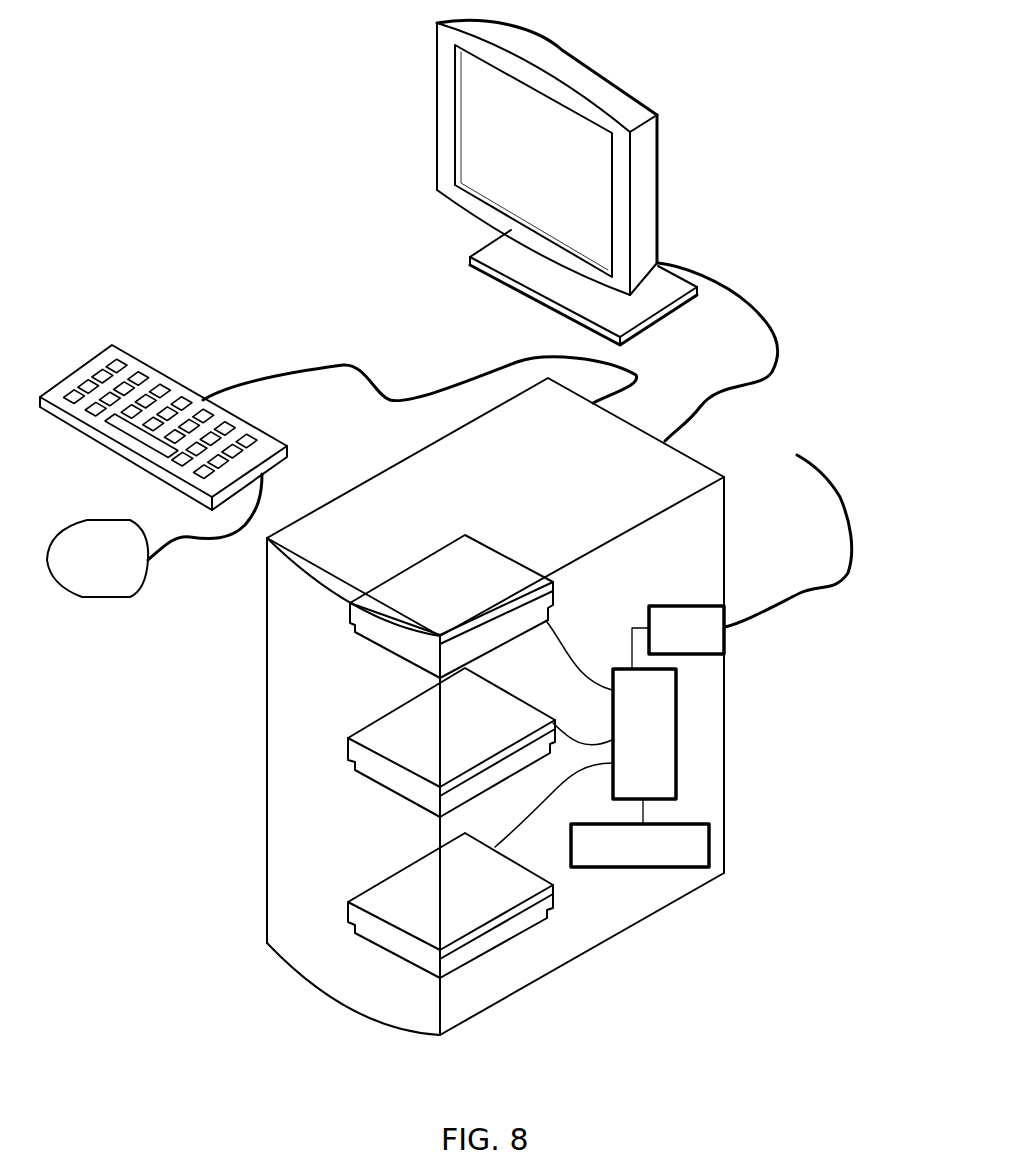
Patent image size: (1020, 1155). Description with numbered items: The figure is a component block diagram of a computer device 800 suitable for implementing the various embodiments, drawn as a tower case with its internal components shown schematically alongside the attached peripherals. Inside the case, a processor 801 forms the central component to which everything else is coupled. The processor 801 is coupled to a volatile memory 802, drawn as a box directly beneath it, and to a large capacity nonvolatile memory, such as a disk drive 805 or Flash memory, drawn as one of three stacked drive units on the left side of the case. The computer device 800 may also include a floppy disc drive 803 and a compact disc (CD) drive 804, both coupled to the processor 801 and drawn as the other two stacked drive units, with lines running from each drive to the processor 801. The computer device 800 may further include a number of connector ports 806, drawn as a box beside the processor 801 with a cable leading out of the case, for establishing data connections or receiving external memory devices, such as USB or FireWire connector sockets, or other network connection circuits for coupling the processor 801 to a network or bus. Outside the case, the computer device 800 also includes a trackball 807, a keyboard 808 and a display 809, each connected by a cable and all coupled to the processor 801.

The computer device 800 is at (725, 498).
The processor 801 is at (662, 746).
The volatile memory 802 is at (661, 857).
The floppy disc drive 803 is at (553, 898).
The compact disc (CD) drive 804 is at (553, 609).
The disk drive 805 is at (503, 780).
The connector ports 806 is at (708, 640).
The trackball 807 is at (102, 598).
The keyboard 808 is at (288, 446).
The display 809 is at (657, 193).